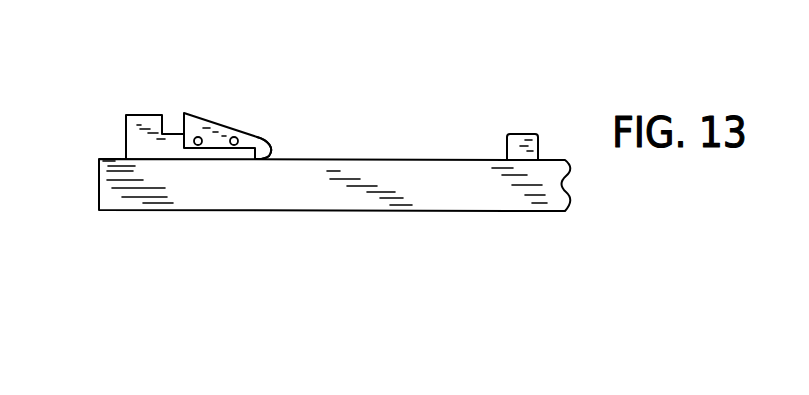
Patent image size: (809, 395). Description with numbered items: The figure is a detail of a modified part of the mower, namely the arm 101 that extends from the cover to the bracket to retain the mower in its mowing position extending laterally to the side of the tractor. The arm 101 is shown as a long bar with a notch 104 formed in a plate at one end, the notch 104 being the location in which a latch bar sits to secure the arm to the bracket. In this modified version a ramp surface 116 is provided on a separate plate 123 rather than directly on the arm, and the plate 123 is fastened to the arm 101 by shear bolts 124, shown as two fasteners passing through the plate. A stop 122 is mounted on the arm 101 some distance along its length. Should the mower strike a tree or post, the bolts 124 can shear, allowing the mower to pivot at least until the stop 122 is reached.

The arm 101 is at (389, 193).
The notch 104 is at (172, 127).
The plate 123 is at (218, 127).
The ramp surface 116 is at (250, 132).
The shear bolts 124 is at (197, 145).
The stop 122 is at (526, 138).